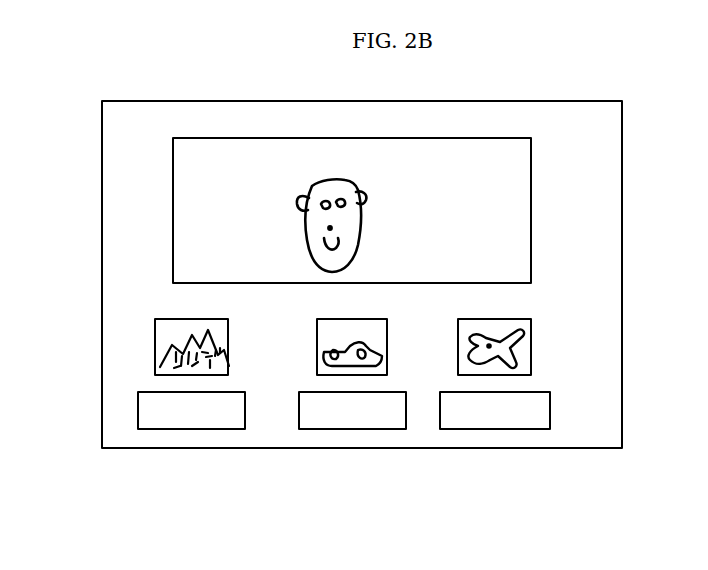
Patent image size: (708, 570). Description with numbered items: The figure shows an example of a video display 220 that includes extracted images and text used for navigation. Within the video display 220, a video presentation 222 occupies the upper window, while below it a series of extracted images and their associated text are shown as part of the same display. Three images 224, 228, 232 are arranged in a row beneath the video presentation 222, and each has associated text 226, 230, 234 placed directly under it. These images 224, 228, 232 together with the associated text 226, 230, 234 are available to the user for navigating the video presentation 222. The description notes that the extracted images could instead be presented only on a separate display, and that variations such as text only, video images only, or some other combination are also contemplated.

The video display 220 is at (560, 101).
The video presentation 222 is at (532, 226).
The extracted image 224 is at (155, 341).
The associated text 226 is at (160, 429).
The extracted image 228 is at (387, 345).
The associated text 230 is at (388, 425).
The extracted image 232 is at (531, 348).
The associated text 234 is at (556, 414).